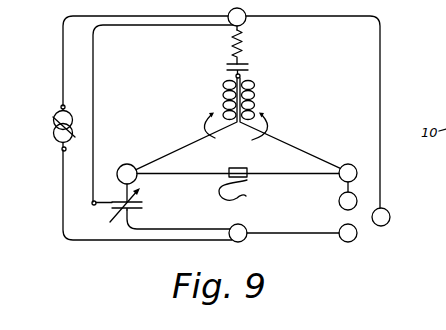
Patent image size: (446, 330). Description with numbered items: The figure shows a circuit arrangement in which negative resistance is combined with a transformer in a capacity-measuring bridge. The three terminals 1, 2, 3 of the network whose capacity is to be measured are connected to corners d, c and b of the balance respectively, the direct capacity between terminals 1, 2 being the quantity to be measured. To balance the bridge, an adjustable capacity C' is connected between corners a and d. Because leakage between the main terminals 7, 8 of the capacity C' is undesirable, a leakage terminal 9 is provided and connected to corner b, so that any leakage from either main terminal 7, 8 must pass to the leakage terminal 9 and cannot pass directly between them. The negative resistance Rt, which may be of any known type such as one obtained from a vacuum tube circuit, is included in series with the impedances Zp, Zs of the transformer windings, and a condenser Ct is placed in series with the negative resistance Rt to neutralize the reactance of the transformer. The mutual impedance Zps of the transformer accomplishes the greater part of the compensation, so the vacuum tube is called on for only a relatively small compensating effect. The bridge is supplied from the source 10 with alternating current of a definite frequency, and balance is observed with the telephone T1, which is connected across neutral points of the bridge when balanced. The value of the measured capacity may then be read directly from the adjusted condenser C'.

The terminal 1 is at (302, 233).
The terminal 2 is at (348, 196).
The terminal 3 is at (381, 217).
The main terminal 7 is at (118, 201).
The main terminal 8 is at (131, 209).
The leakage terminal 9 is at (103, 205).
The source 10 is at (53, 132).
The corner a is at (127, 183).
The corner b is at (237, 19).
The corner c is at (348, 173).
The corner d is at (238, 233).
The negative resistance Rt is at (230, 45).
The condenser Ct is at (245, 65).
The impedance of transformer primary winding Zp is at (214, 100).
The impedance of transformer secondary winding Zs is at (257, 100).
The mutual impedance of the transformer Zps is at (235, 136).
The adjustable capacity C' is at (136, 205).
The telephone T1 is at (248, 180).